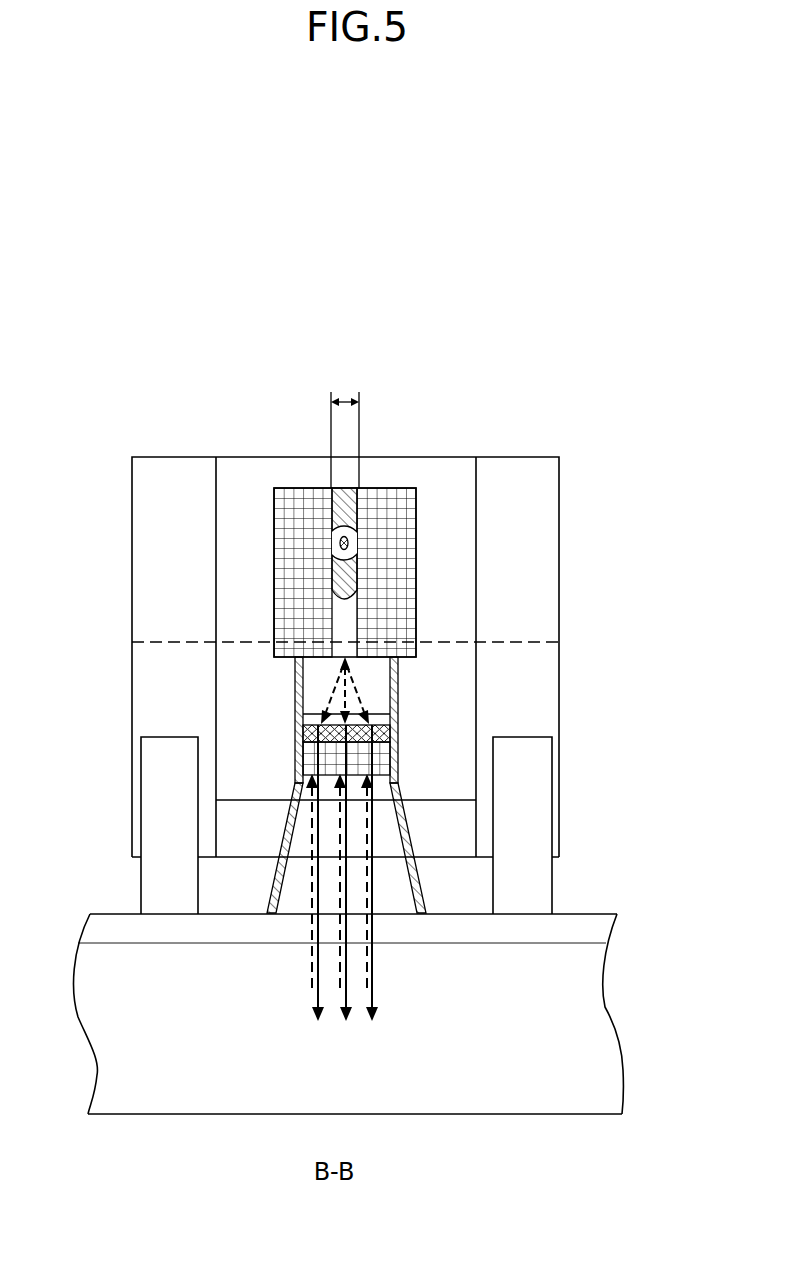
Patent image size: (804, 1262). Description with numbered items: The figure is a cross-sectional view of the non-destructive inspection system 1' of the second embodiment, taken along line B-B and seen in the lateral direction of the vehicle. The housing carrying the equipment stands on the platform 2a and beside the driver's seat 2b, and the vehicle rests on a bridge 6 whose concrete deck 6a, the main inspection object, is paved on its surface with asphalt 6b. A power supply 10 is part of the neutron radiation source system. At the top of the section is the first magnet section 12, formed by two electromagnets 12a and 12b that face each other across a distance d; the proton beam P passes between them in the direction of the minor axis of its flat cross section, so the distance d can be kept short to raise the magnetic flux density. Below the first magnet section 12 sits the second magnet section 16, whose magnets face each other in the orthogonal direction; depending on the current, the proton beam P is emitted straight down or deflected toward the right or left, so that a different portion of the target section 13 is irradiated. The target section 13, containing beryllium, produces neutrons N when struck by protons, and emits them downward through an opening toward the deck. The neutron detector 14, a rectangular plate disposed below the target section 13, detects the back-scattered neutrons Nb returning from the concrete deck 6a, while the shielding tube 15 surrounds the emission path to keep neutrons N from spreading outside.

The non-destructive inspection system 1' is at (109, 307).
The platform 2a is at (216, 834).
The driver's seat 2b is at (545, 457).
The bridge 6 is at (416, 1014).
The concrete deck 6a is at (607, 1005).
The asphalt 6b is at (610, 938).
The power supply 10 is at (464, 457).
The magnet section 12 is at (450, 476).
The magnet 12a is at (303, 488).
The magnet 12b is at (398, 488).
The target section 13 is at (300, 737).
The neutron detector 14 is at (303, 762).
The shielding tube 15 is at (417, 839).
The second magnet section 16 is at (318, 684).
The proton beam P is at (348, 546).
The neutrons N is at (347, 892).
The back-scattered neutrons Nb is at (340, 958).
The distance d is at (345, 429).